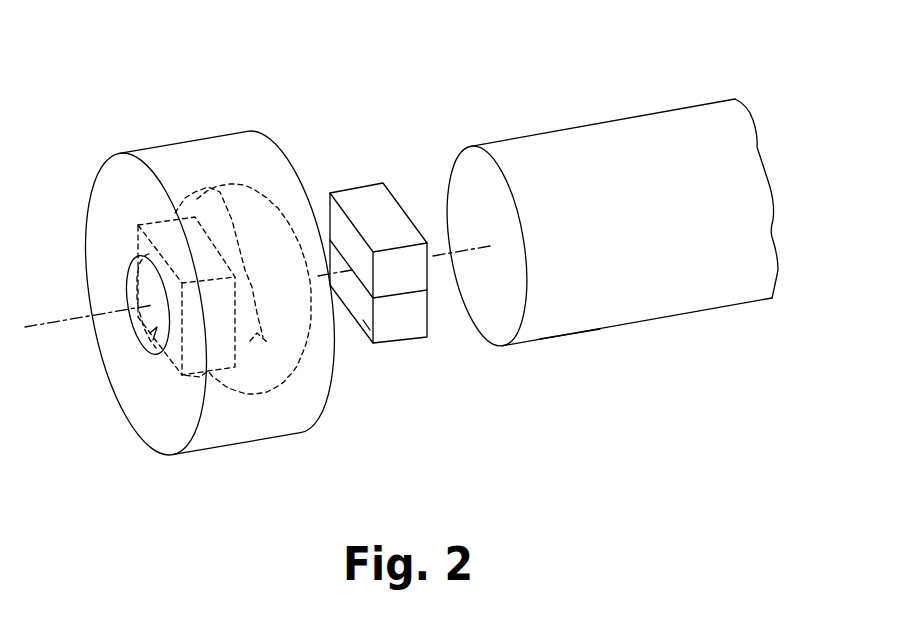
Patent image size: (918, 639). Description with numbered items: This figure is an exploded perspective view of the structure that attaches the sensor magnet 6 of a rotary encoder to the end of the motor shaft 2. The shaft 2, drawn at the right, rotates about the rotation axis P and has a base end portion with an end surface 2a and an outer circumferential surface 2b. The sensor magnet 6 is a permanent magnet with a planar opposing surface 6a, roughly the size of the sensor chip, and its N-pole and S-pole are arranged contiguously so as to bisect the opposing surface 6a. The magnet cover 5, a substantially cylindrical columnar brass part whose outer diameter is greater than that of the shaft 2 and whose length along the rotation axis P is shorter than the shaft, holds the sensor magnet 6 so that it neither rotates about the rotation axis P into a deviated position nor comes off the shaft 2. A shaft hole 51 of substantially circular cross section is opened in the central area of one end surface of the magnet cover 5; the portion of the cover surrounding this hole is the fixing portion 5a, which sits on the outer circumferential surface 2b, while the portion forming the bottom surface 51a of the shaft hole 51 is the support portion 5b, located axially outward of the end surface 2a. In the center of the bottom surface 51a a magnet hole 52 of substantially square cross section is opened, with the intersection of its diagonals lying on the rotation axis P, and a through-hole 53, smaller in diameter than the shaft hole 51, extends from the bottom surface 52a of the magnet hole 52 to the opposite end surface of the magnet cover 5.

The shaft 2 is at (606, 213).
The end surface of the base end portion of the shaft 2a is at (467, 163).
The outer circumferential surface of the base end portion of the shaft 2b is at (555, 317).
The magnet cover 5 is at (199, 237).
The fixing portion 5a is at (135, 58).
The support portion 5b is at (157, 153).
The sensor magnet 6 is at (385, 170).
The opposing surface 6a is at (363, 320).
The shaft hole 51 is at (297, 377).
The bottom surface of the shaft hole 51a is at (266, 345).
The magnet hole 52 is at (157, 220).
The bottom surface of the magnet hole 52a is at (135, 277).
The through-hole 53 is at (150, 333).
The rotation axis P is at (45, 322).